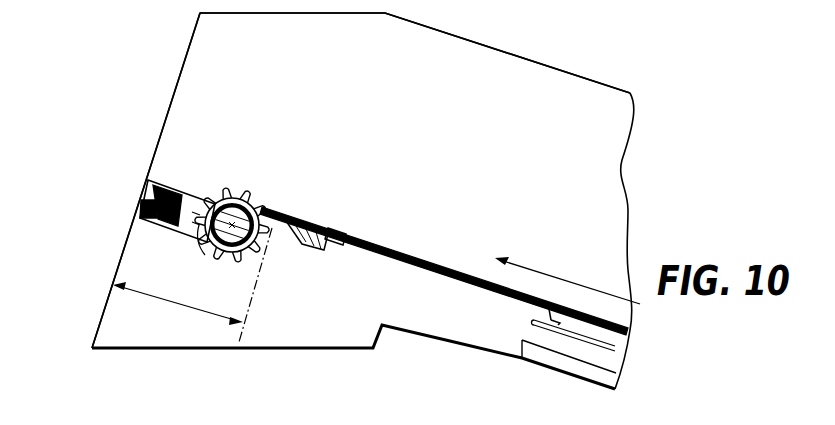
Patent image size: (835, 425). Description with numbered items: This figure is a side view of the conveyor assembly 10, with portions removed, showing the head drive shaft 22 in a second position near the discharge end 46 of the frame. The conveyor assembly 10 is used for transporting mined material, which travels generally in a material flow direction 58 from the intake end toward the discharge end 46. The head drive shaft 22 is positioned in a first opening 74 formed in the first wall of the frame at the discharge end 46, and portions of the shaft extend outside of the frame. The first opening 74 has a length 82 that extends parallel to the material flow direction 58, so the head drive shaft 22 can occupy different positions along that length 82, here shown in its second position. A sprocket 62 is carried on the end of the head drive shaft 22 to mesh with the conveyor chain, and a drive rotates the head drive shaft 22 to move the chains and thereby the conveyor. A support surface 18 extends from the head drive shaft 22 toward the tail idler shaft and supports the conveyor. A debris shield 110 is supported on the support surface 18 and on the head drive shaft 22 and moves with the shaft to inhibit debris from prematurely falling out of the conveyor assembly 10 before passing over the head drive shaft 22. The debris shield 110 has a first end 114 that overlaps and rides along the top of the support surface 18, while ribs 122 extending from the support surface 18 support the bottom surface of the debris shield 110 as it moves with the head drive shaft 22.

The conveyor assembly 10 is at (101, 66).
The support surface 18 is at (412, 258).
The head drive shaft 22 is at (218, 247).
The discharge end 46 is at (98, 202).
The material flow direction 58 is at (567, 280).
The sprocket 62 is at (220, 188).
The first opening 74 is at (150, 198).
The length 82 is at (180, 303).
The debris shield 110 is at (287, 204).
The first end 114 is at (306, 222).
The rib 122 is at (300, 241).